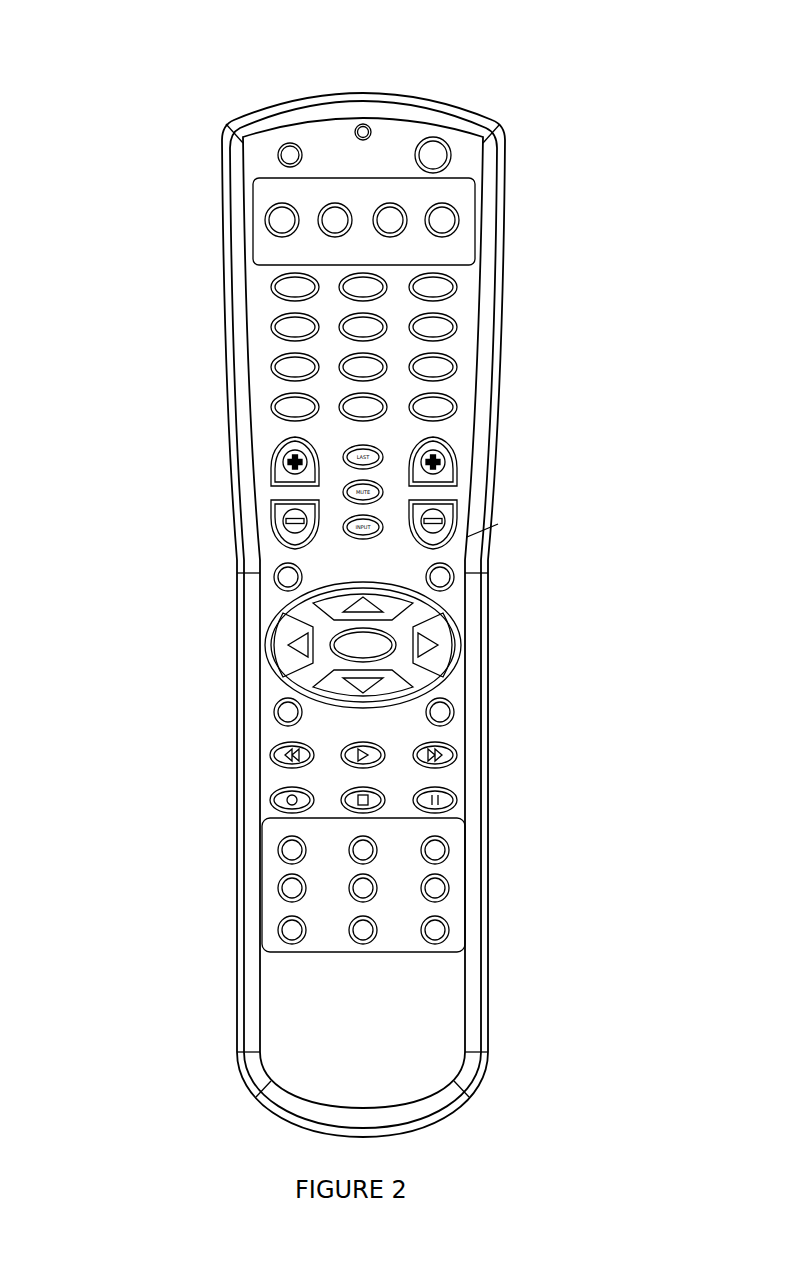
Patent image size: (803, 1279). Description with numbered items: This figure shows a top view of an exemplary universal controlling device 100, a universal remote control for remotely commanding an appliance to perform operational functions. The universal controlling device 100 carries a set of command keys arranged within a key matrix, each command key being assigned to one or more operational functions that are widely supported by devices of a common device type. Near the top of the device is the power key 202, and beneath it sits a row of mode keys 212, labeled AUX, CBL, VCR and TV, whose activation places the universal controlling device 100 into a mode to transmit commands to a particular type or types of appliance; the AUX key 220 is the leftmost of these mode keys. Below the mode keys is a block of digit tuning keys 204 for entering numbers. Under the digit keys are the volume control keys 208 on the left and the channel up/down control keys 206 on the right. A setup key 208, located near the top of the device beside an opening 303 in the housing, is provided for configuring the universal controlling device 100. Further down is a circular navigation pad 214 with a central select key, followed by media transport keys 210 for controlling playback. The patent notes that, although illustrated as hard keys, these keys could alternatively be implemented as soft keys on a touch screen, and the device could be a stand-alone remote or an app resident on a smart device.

The universal controlling device 100 is at (700, 1038).
The power key 202 is at (458, 163).
The digit tuning keys 204 is at (197, 275).
The channel up/down control keys 206 is at (443, 563).
The volume control / setup key 208 is at (270, 152).
The media transport keys 210 is at (545, 735).
The mode keys 212 is at (527, 180).
The navigation keys 214 is at (540, 578).
The AUX device button 220 is at (267, 220).
The light emitting opening 303 is at (363, 123).